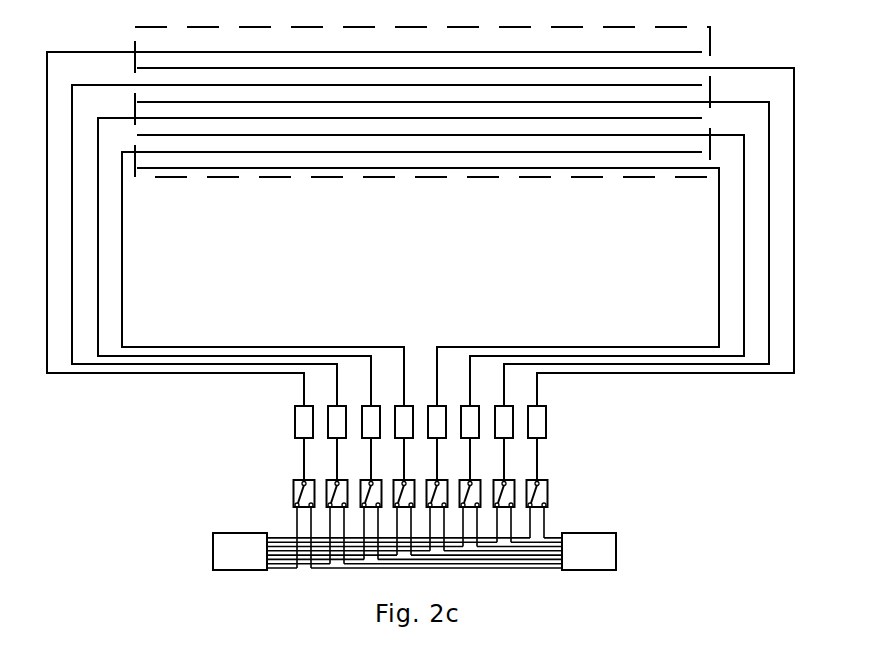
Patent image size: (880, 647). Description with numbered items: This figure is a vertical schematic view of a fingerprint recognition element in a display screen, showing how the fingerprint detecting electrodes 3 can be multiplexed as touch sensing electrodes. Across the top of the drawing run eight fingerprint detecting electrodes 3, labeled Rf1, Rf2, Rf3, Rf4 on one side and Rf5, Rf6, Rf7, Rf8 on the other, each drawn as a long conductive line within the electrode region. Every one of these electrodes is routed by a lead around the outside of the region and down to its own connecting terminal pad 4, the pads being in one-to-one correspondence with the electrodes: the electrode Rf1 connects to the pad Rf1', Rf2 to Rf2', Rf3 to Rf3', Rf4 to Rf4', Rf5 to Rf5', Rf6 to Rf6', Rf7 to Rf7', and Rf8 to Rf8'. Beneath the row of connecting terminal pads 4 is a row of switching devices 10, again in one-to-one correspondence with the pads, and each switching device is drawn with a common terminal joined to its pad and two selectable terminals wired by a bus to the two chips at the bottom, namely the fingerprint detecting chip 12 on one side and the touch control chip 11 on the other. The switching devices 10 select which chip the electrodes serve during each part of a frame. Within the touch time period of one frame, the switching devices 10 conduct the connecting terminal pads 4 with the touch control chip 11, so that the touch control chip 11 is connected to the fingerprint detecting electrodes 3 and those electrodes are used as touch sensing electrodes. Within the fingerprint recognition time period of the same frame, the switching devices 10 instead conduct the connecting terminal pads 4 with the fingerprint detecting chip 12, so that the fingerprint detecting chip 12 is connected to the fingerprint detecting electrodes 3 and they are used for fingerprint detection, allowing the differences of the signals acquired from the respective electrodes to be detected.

The fingerprint detecting electrodes 3 is at (45, 18).
The connecting terminal pads 4 is at (562, 405).
The switching devices 10 is at (562, 468).
The touch control chip 11 is at (616, 555).
The fingerprint detecting chip 12 is at (213, 555).
The fingerprint detecting electrode Rf1 is at (374, 211).
The fingerprint detecting electrode Rf2 is at (387, 228).
The fingerprint detecting electrode Rf3 is at (387, 245).
The fingerprint detecting electrode Rf4 is at (387, 262).
The fingerprint detecting electrode Rf5 is at (465, 212).
The fingerprint detecting electrode Rf6 is at (453, 229).
The fingerprint detecting electrode Rf7 is at (453, 246).
The fingerprint detecting electrode Rf8 is at (453, 263).
The connecting terminal pad Rf1' is at (303, 443).
The connecting terminal pad Rf2' is at (336, 443).
The connecting terminal pad Rf3' is at (369, 443).
The connecting terminal pad Rf4' is at (402, 443).
The connecting terminal pad Rf5' is at (536, 443).
The connecting terminal pad Rf6' is at (502, 443).
The connecting terminal pad Rf7' is at (469, 443).
The connecting terminal pad Rf8' is at (436, 443).